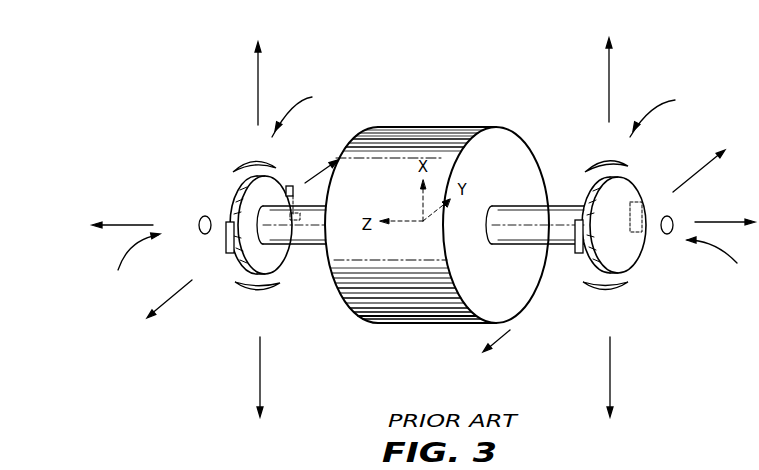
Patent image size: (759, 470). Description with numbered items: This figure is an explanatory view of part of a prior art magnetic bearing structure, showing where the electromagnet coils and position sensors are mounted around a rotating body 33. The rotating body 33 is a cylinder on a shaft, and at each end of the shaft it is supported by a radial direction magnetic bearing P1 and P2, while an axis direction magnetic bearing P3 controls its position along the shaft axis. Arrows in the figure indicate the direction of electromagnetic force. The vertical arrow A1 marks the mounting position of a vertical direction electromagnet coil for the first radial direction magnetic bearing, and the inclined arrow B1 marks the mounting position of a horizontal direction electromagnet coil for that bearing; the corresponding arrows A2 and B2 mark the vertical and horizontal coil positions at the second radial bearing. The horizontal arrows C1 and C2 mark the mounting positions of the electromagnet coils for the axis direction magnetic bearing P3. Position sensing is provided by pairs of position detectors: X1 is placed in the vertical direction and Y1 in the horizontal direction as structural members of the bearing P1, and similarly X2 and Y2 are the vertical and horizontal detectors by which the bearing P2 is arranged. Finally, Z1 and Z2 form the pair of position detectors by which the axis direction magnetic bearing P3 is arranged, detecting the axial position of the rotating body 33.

The rotating body 33 is at (423, 138).
The mounting position of vertical direction electromagnet coil A1 is at (260, 229).
The mounting position of vertical direction electromagnet coil A2 is at (598, 227).
The mounting position of horizontal direction electromagnet coil B1 is at (242, 239).
The mounting position of horizontal direction electromagnet coil B2 is at (604, 251).
The mounting position of electromagnet coil for axis direction magnetic bearing C1 is at (122, 216).
The mounting position of electromagnet coil for axis direction magnetic bearing C2 is at (725, 233).
The radial direction magnetic bearing P1 is at (301, 113).
The radial direction magnetic bearing P2 is at (663, 115).
The axis direction magnetic bearing P3 is at (431, 262).
The position detector X1 is at (240, 170).
The position detector X2 is at (620, 165).
The position detector Y1 is at (290, 186).
The position detector Y2 is at (643, 205).
The position detector Z1 is at (202, 217).
The position detector Z2 is at (672, 217).